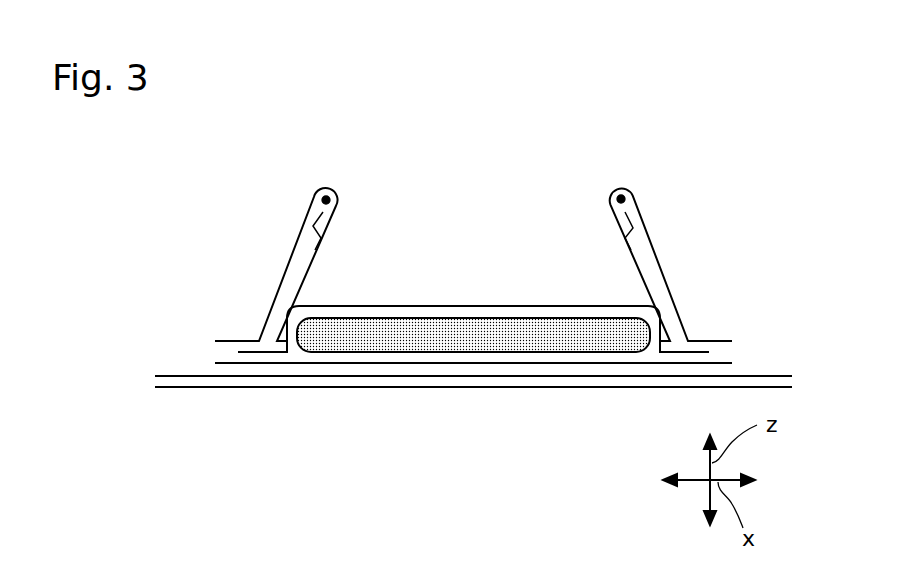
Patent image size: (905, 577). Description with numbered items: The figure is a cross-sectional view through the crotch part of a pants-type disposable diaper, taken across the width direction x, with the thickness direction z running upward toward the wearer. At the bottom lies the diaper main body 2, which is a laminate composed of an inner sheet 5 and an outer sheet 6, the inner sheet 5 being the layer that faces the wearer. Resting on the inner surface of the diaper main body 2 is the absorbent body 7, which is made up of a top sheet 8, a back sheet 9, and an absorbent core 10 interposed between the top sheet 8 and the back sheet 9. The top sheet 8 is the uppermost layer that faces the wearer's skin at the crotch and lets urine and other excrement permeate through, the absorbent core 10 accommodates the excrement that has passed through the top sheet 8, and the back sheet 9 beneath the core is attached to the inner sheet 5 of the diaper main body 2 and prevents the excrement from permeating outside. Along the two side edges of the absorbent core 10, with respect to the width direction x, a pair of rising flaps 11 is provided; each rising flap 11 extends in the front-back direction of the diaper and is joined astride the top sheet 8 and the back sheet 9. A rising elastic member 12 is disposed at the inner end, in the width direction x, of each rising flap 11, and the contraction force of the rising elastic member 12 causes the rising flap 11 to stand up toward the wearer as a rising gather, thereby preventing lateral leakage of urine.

The diaper main body 2 is at (473, 451).
The inner sheet 5 is at (180, 377).
The outer sheet 6 is at (227, 389).
The absorbent body 7 is at (582, 474).
The top sheet 8 is at (473, 306).
The back sheet 9 is at (512, 365).
The absorbent core 10 is at (564, 342).
The rising flap 11 is at (277, 288).
The rising elastic member 12 is at (335, 203).